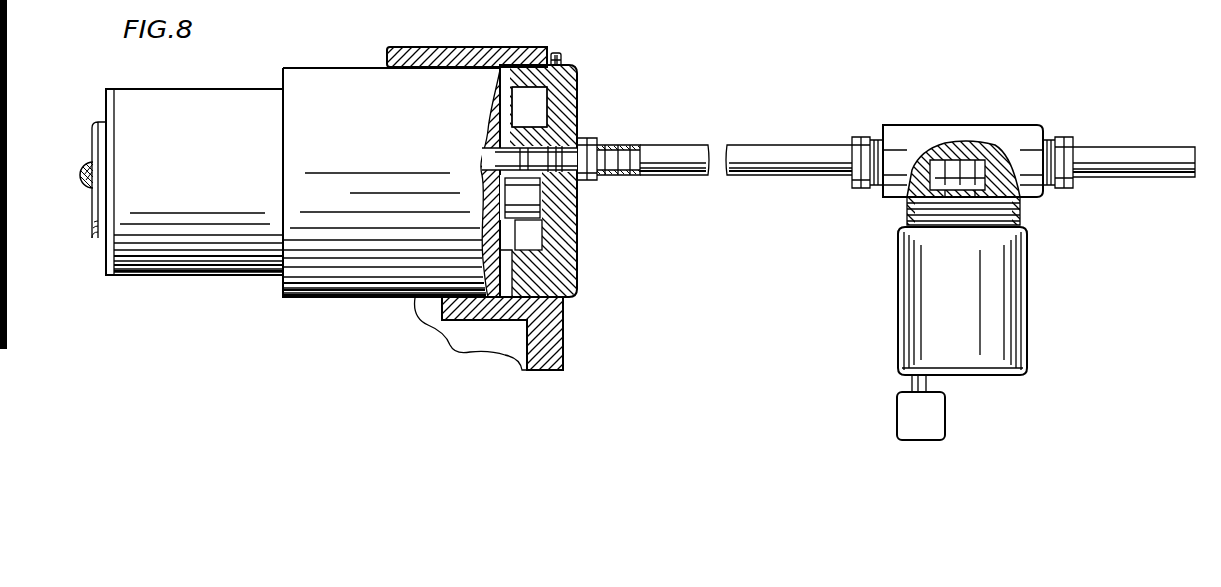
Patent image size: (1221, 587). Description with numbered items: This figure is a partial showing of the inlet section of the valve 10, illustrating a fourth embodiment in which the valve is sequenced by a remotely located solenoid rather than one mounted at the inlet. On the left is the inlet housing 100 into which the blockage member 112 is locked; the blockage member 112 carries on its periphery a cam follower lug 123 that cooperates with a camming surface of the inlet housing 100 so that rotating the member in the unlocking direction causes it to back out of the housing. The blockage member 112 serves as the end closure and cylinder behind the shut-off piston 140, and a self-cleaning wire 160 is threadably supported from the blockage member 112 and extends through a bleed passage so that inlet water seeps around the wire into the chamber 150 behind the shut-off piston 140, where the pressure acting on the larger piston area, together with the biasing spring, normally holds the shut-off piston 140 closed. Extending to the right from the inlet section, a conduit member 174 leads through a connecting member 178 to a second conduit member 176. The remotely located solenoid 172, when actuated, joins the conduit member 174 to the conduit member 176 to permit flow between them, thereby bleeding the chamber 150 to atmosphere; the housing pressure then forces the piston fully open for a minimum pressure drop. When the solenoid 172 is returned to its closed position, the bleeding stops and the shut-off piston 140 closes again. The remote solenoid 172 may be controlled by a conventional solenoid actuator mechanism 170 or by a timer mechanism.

The valve 10 is at (557, 30).
The inlet housing 100 is at (452, 47).
The blockage member 112 is at (580, 80).
The cam follower lug 123 is at (567, 60).
The shut-off piston 140 is at (218, 176).
The chamber 150 is at (540, 122).
The self-cleaning wire 160 is at (88, 170).
The solenoid actuator mechanism 170 is at (935, 434).
The remotely located solenoid 172 is at (970, 313).
The conduit member 174 is at (740, 152).
The conduit member 176 is at (1128, 152).
The connecting member 178 is at (945, 133).